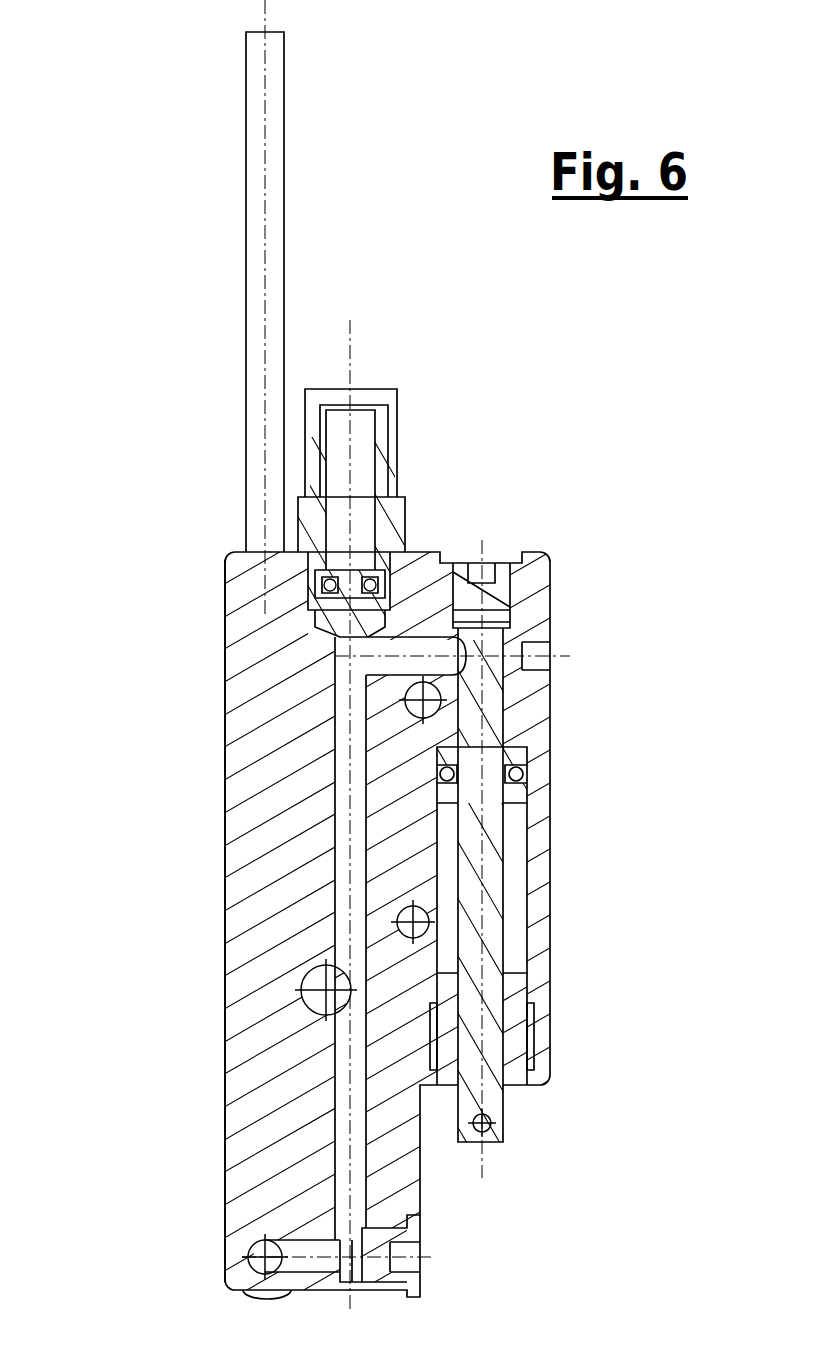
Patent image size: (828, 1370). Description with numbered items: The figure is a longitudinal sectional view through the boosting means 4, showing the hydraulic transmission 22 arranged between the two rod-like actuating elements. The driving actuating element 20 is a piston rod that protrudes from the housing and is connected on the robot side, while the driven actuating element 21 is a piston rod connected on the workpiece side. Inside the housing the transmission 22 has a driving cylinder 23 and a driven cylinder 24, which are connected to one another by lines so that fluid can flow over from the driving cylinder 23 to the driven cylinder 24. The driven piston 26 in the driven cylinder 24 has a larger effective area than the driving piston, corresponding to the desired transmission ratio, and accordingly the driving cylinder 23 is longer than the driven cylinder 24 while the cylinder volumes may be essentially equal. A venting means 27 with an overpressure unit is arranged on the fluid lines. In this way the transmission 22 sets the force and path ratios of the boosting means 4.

The boosting means 4 is at (210, 978).
The transmission 22 is at (299, 880).
The driving cylinder 23 is at (277, 787).
The driving actuating element 20 is at (257, 253).
The venting means 27 is at (362, 468).
The driven cylinder 24 is at (512, 867).
The driven piston 26 is at (490, 762).
The driven actuating element 21 is at (488, 1087).